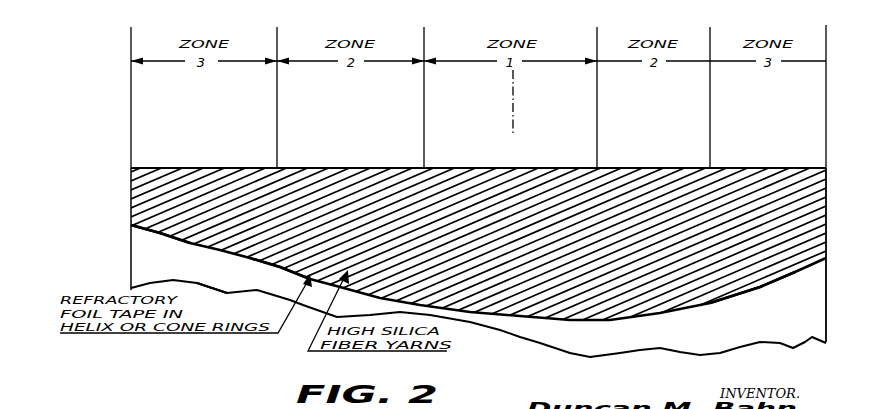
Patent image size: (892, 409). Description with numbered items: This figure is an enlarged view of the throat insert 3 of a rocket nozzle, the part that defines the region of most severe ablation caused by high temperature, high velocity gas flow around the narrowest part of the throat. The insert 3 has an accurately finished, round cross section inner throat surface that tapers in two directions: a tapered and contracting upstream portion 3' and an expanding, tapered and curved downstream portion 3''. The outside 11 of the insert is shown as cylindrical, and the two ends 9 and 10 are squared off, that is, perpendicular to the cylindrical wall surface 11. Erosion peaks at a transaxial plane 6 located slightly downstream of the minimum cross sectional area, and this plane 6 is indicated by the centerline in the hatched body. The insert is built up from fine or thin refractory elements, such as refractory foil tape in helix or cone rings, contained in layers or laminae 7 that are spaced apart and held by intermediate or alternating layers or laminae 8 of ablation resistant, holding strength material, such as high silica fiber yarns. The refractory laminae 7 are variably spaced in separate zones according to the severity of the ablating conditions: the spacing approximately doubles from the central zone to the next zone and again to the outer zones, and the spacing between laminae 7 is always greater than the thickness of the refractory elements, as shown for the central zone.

The throat insert 3 is at (459, 302).
The tapered and contracting or upstream portion 3' is at (754, 294).
The expanding or downstream tapered and curved portion 3'' is at (137, 240).
The transaxial plane 6 is at (516, 112).
The layers or laminae of refractory elements 7 is at (278, 267).
The intermediate or alternating layers or laminae 8 is at (214, 255).
The end 9 is at (829, 181).
The end 10 is at (131, 197).
The outside (cylindrical wall surface) 11 is at (492, 168).